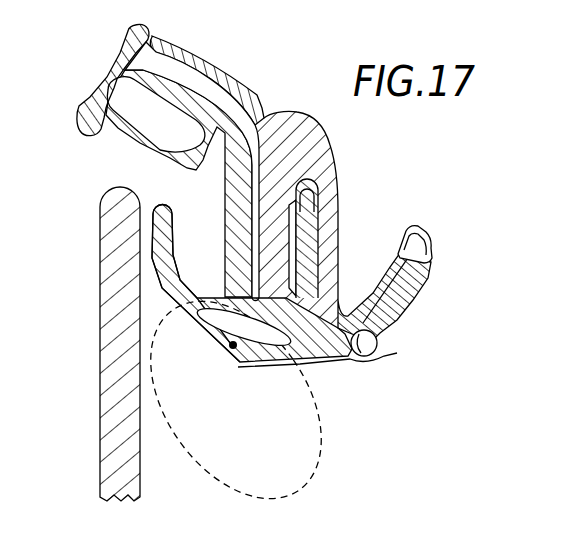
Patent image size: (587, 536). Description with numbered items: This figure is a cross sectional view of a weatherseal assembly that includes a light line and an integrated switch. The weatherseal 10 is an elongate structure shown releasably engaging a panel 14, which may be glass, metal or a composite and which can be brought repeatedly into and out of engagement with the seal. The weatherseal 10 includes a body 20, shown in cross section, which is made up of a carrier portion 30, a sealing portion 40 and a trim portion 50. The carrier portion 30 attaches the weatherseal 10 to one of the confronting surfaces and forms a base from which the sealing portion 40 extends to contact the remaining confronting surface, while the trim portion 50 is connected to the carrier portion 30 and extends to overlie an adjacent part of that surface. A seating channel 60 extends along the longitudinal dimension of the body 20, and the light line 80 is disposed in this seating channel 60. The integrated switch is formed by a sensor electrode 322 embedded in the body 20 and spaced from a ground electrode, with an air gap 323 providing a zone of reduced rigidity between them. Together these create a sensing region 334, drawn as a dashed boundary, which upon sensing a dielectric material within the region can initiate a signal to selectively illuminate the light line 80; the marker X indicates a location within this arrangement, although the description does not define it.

The weatherseal 10 is at (270, 223).
The panel 14 is at (105, 286).
The body 20 is at (210, 222).
The carrier portion 30 is at (227, 191).
The sealing portion 40 is at (117, 129).
The trim portion 50 is at (428, 278).
The seating channel 60 is at (377, 343).
The light line 80 is at (397, 353).
The sensor electrode 322 is at (233, 356).
The air gap 323 is at (297, 363).
The sensing region 334 is at (320, 415).
The reference point X is at (268, 355).